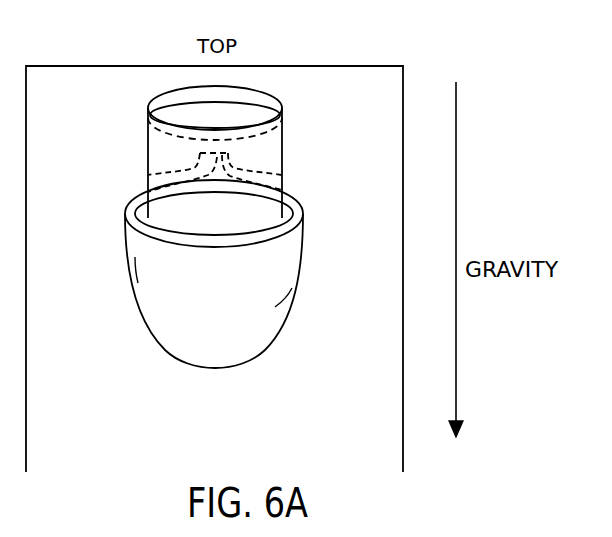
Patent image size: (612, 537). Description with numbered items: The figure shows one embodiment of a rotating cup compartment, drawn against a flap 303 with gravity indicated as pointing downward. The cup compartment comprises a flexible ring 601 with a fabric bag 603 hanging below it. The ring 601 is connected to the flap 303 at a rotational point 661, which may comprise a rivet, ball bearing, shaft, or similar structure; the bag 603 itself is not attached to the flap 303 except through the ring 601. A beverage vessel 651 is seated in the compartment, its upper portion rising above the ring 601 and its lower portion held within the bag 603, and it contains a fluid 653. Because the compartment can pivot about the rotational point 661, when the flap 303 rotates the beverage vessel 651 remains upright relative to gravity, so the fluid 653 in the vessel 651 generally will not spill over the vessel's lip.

The flap 303 is at (418, 54).
The beverage vessel 651 is at (148, 163).
The fluid 653 is at (258, 108).
The rotational point 661 is at (217, 153).
The flexible ring 601 is at (293, 200).
The fabric bag 603 is at (273, 313).